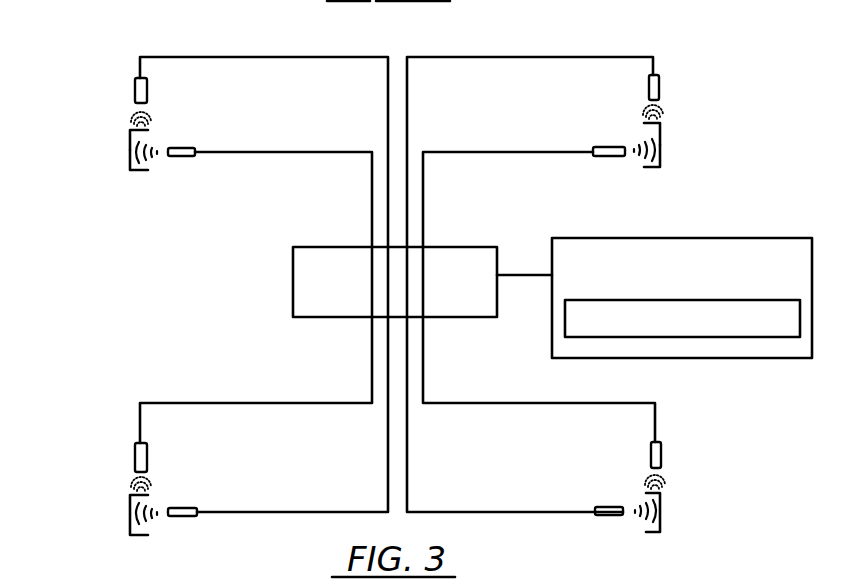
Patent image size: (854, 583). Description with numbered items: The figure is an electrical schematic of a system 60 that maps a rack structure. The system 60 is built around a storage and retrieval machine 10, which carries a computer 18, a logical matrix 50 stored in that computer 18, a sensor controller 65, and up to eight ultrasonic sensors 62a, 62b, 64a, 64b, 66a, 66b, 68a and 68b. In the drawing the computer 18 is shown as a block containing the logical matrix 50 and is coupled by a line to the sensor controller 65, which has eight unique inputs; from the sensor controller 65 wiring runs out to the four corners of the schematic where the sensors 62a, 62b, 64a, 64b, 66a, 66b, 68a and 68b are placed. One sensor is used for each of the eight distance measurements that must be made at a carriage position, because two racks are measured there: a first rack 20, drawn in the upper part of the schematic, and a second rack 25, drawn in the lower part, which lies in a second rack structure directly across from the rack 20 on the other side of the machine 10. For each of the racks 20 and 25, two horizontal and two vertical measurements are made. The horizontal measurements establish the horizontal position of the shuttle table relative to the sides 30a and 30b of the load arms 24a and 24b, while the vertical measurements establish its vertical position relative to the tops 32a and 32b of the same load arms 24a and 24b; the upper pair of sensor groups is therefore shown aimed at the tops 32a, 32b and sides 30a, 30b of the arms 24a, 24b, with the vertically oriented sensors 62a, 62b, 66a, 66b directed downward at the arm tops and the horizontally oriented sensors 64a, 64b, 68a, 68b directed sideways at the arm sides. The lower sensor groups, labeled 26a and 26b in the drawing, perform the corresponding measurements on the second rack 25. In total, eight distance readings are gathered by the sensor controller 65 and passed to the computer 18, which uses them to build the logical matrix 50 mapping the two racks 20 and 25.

The storage and retrieval machine 10 is at (718, 374).
The computer 18 is at (750, 207).
The first rack 20 is at (135, 156).
The load arm 24a is at (130, 152).
The load arm 24b is at (661, 150).
The second rack 25 is at (149, 483).
The third sensor 26a is at (130, 513).
The fourth sensor 26b is at (662, 512).
The side of load arm 30a is at (131, 170).
The side of load arm 30b is at (661, 167).
The top of load arm 32a is at (131, 129).
The top of load arm 32b is at (661, 124).
The logical matrix 50 is at (604, 280).
The system 60 is at (673, 45).
The ultrasonic sensor 62a is at (147, 90).
The ultrasonic sensor 62b is at (660, 88).
The ultrasonic sensor 64a is at (187, 148).
The ultrasonic sensor 64b is at (607, 146).
The sensor controller 65 is at (462, 247).
The ultrasonic sensor 66a is at (148, 456).
The ultrasonic sensor 66b is at (662, 458).
The ultrasonic sensor 68a is at (196, 509).
The ultrasonic sensor 68b is at (608, 506).